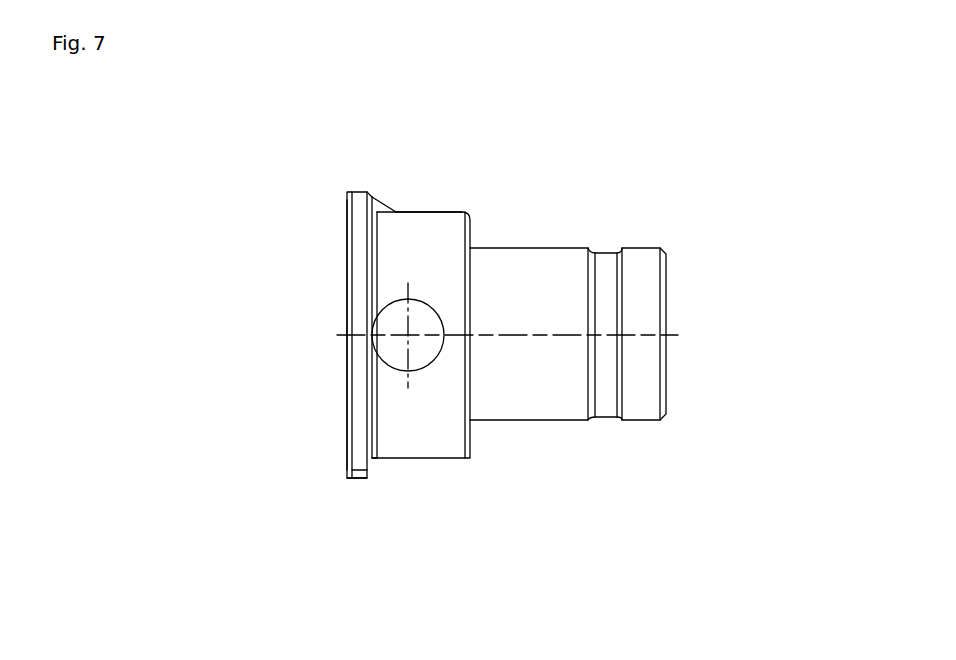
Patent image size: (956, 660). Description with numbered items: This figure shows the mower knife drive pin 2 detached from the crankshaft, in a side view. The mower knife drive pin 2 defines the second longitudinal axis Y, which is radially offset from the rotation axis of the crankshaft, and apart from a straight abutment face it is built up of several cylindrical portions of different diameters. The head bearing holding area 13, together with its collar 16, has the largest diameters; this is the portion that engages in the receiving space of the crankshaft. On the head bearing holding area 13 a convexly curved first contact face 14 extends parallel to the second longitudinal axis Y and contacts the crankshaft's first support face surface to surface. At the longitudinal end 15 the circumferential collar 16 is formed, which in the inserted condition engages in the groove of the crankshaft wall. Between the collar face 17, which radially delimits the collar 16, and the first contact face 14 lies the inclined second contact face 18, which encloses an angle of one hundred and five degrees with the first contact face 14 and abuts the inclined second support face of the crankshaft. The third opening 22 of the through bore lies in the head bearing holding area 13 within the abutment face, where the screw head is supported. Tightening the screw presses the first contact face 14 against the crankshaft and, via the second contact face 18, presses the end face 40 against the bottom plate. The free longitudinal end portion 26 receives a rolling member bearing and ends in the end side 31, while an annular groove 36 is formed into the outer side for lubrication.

The mower knife drive pin 2 is at (293, 226).
The head bearing holding area 13 is at (445, 211).
The first contact face 14 is at (447, 421).
The longitudinal end 15 is at (349, 478).
The collar 16 is at (368, 192).
The collar face 17 is at (360, 472).
The second contact face 18 is at (380, 460).
The third opening 22 is at (426, 319).
The free longitudinal end portion 26 is at (573, 426).
The end side 31 is at (670, 383).
The annular groove 36 is at (609, 258).
The end face 40 is at (347, 288).
The second longitudinal axis y is at (677, 333).